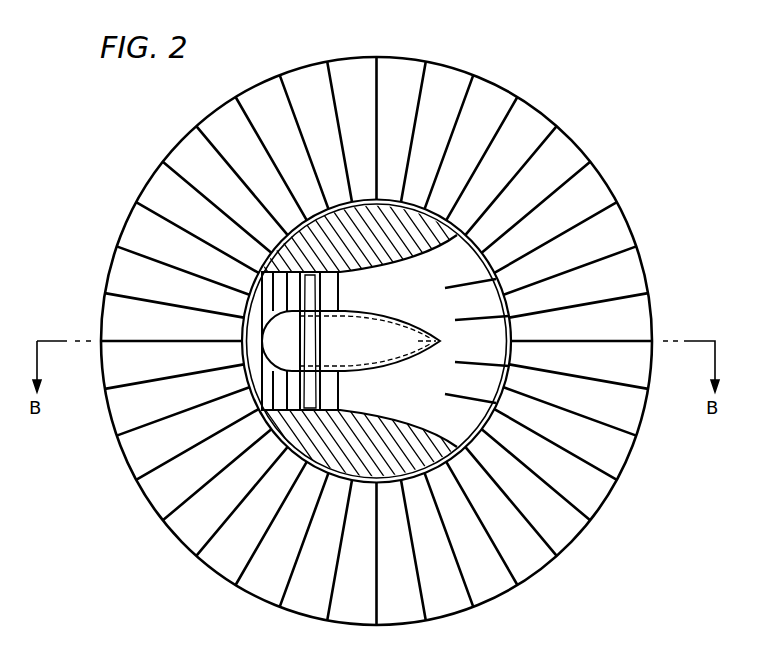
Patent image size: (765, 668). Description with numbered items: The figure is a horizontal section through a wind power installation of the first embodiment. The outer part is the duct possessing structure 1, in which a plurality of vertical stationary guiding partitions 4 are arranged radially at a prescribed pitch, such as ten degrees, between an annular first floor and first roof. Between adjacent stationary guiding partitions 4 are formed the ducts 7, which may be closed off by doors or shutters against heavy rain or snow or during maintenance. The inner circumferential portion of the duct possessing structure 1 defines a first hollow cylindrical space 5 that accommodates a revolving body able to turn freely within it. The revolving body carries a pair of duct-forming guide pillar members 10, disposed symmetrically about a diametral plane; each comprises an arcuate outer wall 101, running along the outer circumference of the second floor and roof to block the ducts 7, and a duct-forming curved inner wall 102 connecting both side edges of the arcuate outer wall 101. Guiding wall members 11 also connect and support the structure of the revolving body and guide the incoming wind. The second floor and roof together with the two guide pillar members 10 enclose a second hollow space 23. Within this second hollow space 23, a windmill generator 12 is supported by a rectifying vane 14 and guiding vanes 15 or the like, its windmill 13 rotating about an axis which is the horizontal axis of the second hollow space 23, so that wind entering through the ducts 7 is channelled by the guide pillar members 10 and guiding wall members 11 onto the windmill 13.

The duct possessing structure 1 is at (537, 108).
The vertical stationary guiding partitions 4 is at (185, 175).
The ducts 7 is at (146, 232).
The first hollow cylindrical space 5 is at (383, 490).
The second hollow space 23 is at (248, 334).
The duct-forming guide pillar members 10 is at (362, 318).
The arcuate outer wall 101 is at (345, 205).
The duct-forming curved inner wall 102 is at (397, 264).
The guiding wall members 11 is at (479, 317).
The windmill generator 12 is at (397, 366).
The windmill 13 is at (307, 292).
The rectifying vane 14 is at (262, 378).
The guiding vanes 15 is at (330, 410).